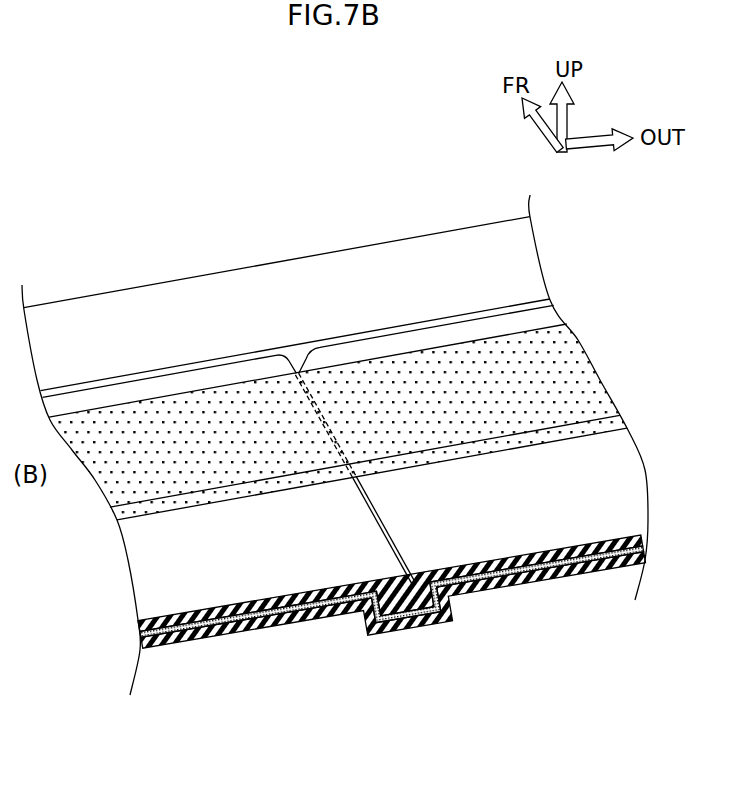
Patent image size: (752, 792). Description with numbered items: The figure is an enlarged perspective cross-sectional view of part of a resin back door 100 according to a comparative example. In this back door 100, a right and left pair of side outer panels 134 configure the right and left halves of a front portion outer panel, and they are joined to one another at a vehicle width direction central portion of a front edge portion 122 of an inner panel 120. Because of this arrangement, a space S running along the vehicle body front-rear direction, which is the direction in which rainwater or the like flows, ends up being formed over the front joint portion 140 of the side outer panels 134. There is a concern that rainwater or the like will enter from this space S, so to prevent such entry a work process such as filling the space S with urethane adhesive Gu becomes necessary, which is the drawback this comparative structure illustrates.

The resin back door 100 is at (261, 250).
The urethane adhesive Gu is at (575, 370).
The side outer panel 134 is at (183, 547).
The space S is at (402, 530).
The front joint portion 140 is at (402, 652).
The front edge portion 122 is at (407, 620).
The inner panel 120 is at (402, 652).